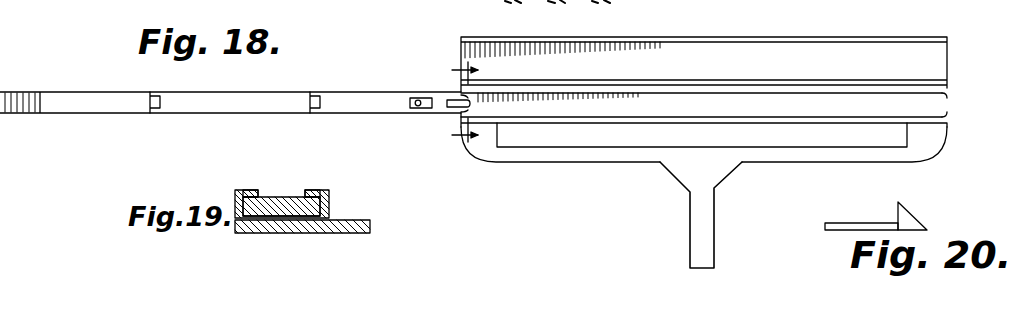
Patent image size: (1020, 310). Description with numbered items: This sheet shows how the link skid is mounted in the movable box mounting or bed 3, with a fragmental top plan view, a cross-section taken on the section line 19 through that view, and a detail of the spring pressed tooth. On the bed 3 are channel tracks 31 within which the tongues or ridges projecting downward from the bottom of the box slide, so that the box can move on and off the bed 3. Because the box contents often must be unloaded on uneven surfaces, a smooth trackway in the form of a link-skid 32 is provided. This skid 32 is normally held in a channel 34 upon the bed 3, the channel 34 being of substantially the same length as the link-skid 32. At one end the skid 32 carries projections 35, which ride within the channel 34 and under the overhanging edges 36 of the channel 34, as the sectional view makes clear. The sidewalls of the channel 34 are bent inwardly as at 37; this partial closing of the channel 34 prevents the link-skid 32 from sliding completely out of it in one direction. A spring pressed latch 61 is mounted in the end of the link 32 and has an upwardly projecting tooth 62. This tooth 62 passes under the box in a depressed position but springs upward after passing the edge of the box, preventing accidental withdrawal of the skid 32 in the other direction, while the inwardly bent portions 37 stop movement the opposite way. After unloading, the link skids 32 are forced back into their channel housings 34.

In FIG. 18, the bed 3 is at (708, 198).
In FIG. 19, the bed 3 is at (345, 235).
In FIG. 18, the section line 19 is at (452, 101).
In FIG. 18, the channel tracks 31 is at (722, 50).
In FIG. 18, the link-skid 32 is at (217, 116).
In FIG. 19, the link-skid 32 is at (288, 210).
In FIG. 18, the channel 34 is at (598, 107).
In FIG. 19, the channel 34 is at (330, 210).
In FIG. 18, the projections 35 is at (472, 115).
In FIG. 19, the overhanging edges 36 is at (310, 193).
In FIG. 18, the inwardly bent sidewalls 37 is at (462, 116).
In FIG. 18, the spring pressed latch 61 is at (428, 100).
In FIG. 20, the spring pressed latch 61 is at (859, 222).
In FIG. 20, the tooth 62 is at (918, 223).